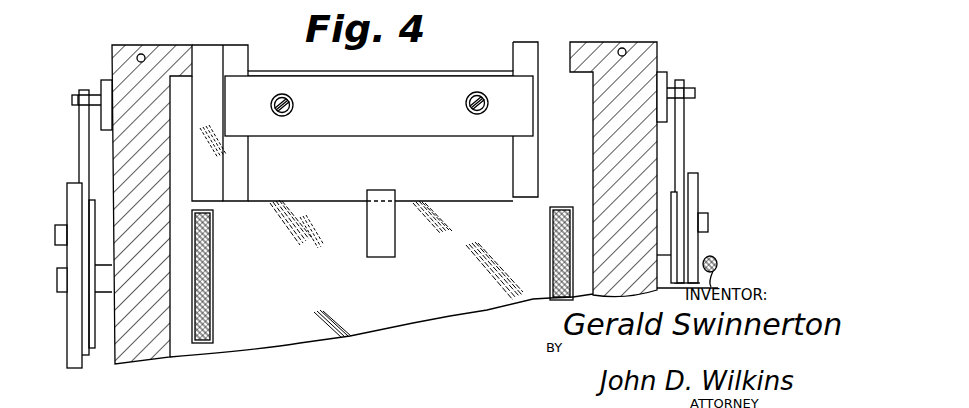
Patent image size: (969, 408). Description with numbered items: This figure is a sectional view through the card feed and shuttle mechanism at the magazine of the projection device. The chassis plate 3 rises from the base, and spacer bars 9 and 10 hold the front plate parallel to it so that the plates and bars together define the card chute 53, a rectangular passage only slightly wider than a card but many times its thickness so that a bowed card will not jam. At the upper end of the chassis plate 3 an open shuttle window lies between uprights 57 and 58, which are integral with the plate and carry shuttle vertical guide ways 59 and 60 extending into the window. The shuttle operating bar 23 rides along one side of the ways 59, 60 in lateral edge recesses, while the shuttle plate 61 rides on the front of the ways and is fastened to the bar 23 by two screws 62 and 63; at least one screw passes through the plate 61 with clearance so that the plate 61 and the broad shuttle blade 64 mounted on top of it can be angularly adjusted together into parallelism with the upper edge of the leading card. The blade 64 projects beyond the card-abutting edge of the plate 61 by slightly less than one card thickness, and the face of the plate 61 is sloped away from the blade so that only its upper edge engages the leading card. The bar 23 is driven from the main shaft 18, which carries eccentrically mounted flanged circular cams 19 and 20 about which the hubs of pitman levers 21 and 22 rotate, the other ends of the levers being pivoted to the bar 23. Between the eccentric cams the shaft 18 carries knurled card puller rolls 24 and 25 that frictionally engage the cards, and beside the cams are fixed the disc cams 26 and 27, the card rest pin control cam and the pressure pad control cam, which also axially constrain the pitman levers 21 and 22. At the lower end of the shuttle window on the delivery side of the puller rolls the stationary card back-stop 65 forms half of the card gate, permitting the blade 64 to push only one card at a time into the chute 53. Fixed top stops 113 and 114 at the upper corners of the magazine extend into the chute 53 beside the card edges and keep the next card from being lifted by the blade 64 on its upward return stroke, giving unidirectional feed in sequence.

The chassis plate 3 is at (410, 328).
The spacer bar 9 is at (153, 356).
The spacer bar 10 is at (617, 175).
The main shaft 18 is at (60, 279).
The eccentrically mounted flanged circular cam 19 is at (95, 207).
The eccentrically mounted flanged circular cam 20 is at (676, 205).
The pitman lever 21 is at (82, 126).
The pitman lever 22 is at (684, 128).
The shuttle operating bar 23 is at (97, 101).
The card puller roll 24 is at (204, 245).
The card puller roll 25 is at (553, 240).
The card rest pin control cam 26 is at (68, 192).
The pressure pad control cam 27 is at (700, 185).
The card chute 53 is at (319, 207).
The upright 57 is at (208, 178).
The upright 58 is at (550, 160).
The shuttle vertical guide way 59 is at (240, 160).
The shuttle vertical guide way 60 is at (521, 149).
The shuttle plate 61 is at (379, 118).
The screw 62 is at (289, 108).
The screw 63 is at (466, 105).
The shuttle blade 64 is at (430, 72).
The card back-stop 65 is at (392, 196).
The top stop 113 is at (179, 47).
The top stop 114 is at (584, 54).